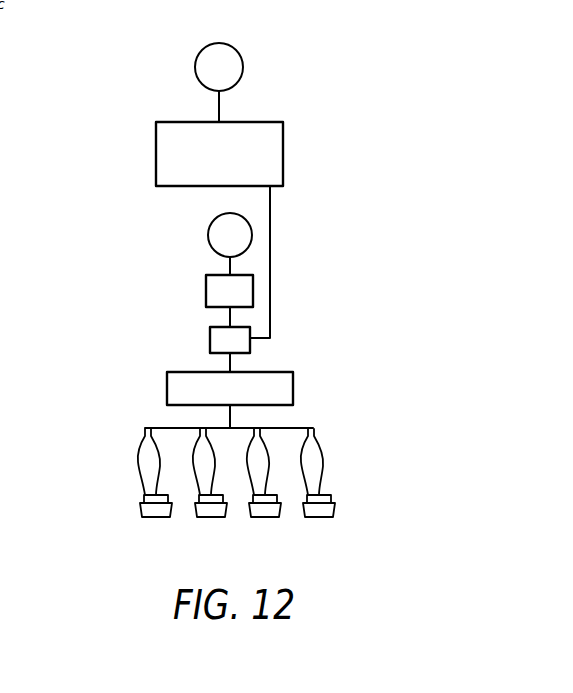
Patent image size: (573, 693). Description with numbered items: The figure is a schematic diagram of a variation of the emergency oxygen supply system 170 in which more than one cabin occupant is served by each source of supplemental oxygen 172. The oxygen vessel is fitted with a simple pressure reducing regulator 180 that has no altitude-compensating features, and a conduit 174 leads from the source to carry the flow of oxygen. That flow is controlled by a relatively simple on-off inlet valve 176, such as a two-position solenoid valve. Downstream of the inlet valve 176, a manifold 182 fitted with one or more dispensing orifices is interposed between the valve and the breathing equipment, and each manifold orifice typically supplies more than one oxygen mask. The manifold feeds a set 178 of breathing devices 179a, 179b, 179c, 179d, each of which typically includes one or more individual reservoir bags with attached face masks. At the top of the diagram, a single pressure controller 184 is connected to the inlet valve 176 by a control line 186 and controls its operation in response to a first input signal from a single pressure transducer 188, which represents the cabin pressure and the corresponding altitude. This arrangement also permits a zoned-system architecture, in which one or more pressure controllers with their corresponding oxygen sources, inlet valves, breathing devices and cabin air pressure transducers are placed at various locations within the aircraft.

The emergency oxygen supply system 170 is at (302, 137).
The source of supplemental oxygen 172 is at (208, 238).
The conduit 174 is at (226, 267).
The inlet valve 176 is at (210, 340).
The set of breathing devices 178 is at (325, 450).
The breathing device 179a is at (143, 474).
The breathing device 179b is at (213, 517).
The breathing device 179c is at (264, 517).
The breathing device 179d is at (322, 464).
The pressure reducing regulator 180 is at (206, 292).
The manifold 182 is at (167, 395).
The pressure controller 184 is at (156, 155).
The control line 186 is at (270, 262).
The pressure transducer 188 is at (196, 67).